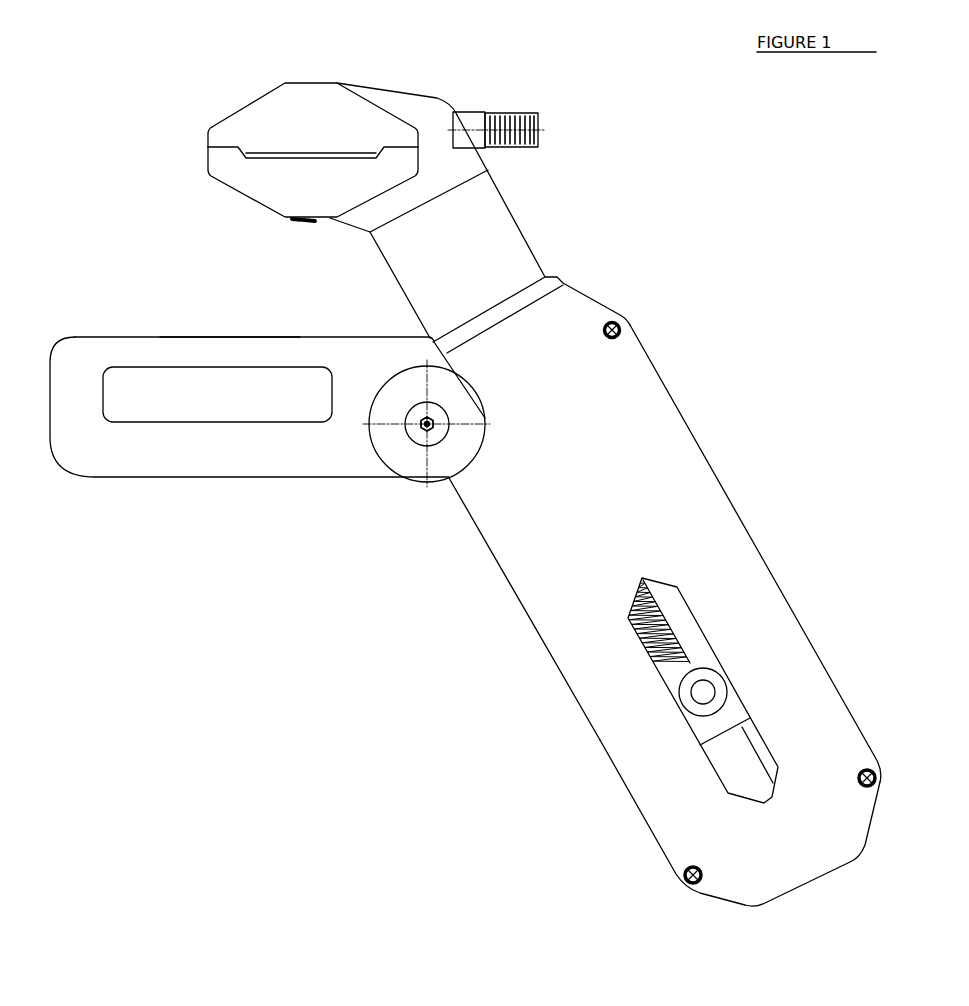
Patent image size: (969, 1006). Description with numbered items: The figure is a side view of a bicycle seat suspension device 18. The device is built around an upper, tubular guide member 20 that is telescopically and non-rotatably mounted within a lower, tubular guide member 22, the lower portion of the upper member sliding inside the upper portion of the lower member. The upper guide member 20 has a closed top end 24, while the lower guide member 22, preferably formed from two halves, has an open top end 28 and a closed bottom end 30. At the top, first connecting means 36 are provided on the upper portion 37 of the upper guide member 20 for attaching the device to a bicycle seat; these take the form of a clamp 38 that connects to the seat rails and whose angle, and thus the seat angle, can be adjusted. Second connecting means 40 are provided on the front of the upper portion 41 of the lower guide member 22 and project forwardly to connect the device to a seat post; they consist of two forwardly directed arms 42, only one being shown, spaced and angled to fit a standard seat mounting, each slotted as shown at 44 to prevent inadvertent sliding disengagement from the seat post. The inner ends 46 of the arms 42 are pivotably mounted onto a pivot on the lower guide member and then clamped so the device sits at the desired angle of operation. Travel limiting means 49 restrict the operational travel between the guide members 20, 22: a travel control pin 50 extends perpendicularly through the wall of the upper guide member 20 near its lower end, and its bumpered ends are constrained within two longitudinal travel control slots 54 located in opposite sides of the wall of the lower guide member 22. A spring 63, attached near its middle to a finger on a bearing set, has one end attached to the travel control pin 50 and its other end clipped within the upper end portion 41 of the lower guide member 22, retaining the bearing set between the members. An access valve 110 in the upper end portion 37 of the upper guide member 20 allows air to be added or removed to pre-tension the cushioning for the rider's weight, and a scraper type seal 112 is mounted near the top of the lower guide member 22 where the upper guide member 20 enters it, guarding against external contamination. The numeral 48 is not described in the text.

The seat suspension device 18 is at (248, 917).
The upper tubular guide member 20 is at (543, 220).
The lower tubular guide member 22 is at (755, 553).
The closed top end 24 is at (392, 131).
The open top end 28 is at (626, 308).
The closed bottom end 30 is at (740, 846).
The first connecting means 36 is at (306, 108).
The upper portion of upper guide member 37 is at (410, 325).
The clamp 38 is at (298, 189).
The second connecting means 40 is at (249, 437).
The upper portion of lower guide member 41 is at (505, 609).
The forwardly directed arm 42 is at (659, 770).
The slot 44 is at (217, 350).
The inner end of arm 46 is at (375, 439).
The pivot pin 48 is at (275, 410).
The travel limiting means 49 is at (728, 679).
The travel control pin 50 is at (618, 720).
The longitudinal travel control slot 54 is at (568, 621).
The spring 63 is at (586, 652).
The access valve 110 is at (517, 108).
The scraper type seal 112 is at (534, 298).